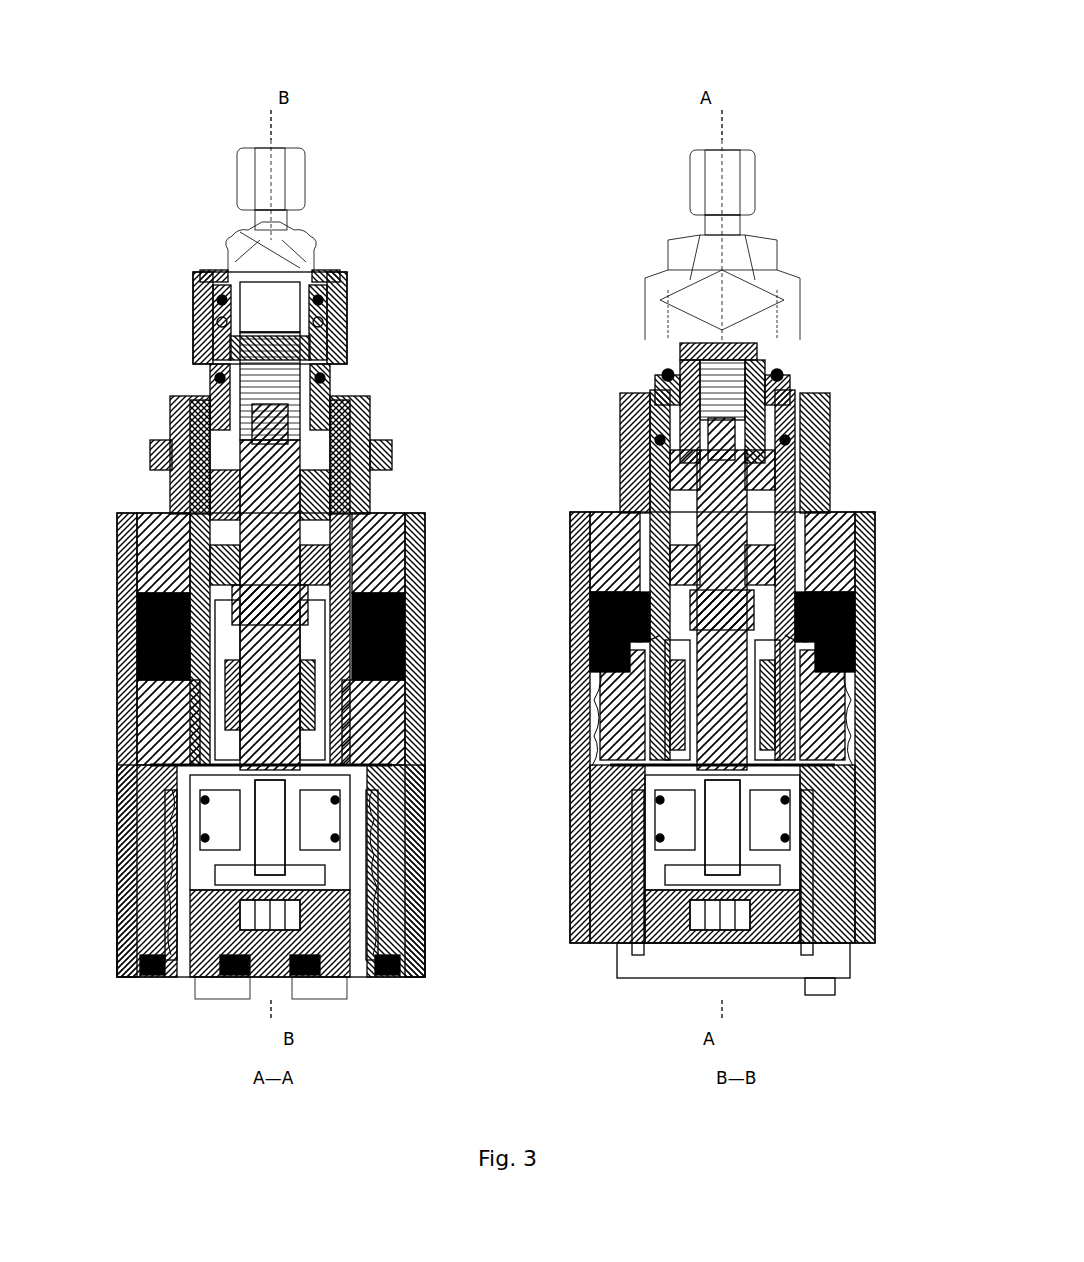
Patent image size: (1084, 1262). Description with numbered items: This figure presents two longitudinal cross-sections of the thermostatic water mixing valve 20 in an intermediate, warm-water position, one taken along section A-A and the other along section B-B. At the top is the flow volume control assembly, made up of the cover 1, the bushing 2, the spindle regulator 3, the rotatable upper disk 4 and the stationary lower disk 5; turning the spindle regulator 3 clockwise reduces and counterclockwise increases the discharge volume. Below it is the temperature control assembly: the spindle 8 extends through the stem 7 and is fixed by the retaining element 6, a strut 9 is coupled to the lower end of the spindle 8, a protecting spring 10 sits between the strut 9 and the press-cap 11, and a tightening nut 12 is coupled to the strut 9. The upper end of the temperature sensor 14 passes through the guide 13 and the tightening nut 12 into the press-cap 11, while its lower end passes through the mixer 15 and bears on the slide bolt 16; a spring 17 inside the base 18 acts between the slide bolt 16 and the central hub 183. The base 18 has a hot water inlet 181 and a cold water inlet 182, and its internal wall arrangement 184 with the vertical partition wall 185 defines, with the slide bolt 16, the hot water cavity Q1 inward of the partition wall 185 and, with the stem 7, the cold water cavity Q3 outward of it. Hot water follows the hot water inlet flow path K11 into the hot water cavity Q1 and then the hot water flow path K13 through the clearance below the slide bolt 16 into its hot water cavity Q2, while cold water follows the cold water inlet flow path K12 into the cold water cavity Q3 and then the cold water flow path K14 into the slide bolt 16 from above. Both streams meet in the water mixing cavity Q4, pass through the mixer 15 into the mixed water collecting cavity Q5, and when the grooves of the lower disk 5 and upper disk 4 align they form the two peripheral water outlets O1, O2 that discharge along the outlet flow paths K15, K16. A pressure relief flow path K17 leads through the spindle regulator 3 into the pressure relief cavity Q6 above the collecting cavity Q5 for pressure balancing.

The thermostatic water mixing valve 20 is at (808, 83).
The cover 1 is at (185, 512).
The bushing 2 is at (150, 520).
The spindle regulator 3 is at (135, 548).
The rotatable upper disk 4 is at (150, 600).
The stationary lower disk 5 is at (160, 635).
The retaining element 6 is at (322, 300).
The stem 7 is at (332, 314).
The spindle 8 is at (320, 340).
The strut 9 is at (310, 362).
The protecting spring 10 is at (300, 396).
The press-cap 11 is at (335, 422).
The tightening nut 12 is at (352, 442).
The guide 13 is at (400, 542).
The temperature sensor 14 is at (396, 576).
The mixer 15 is at (387, 666).
The slide bolt 16 is at (382, 762).
The spring 17 is at (372, 782).
The base 18 is at (376, 858).
The hot water inlet 181 is at (165, 968).
The cold water inlet 182 is at (383, 965).
The central hub 183 is at (665, 985).
The internal wall arrangement 184 is at (135, 947).
The partition wall 185 is at (300, 1000).
The hot water cavity Q1 is at (135, 665).
The hot water cavity of the slide bolt Q2 is at (168, 802).
The cold water cavity Q3 is at (172, 770).
The water mixing cavity Q4 is at (170, 692).
The mixed water collecting cavity Q5 is at (392, 620).
The pressure relief cavity Q6 is at (600, 592).
The hot water inlet flow path K11 is at (172, 912).
The cold water inlet flow path K12 is at (372, 897).
The hot water flow path K13 is at (172, 842).
The cold water flow path K14 is at (396, 706).
The outlet flow path K15 is at (592, 786).
The outlet flow path K16 is at (856, 786).
The pressure relief flow path K17 is at (600, 546).
The water outlet O1 is at (592, 652).
The water outlet O2 is at (860, 652).